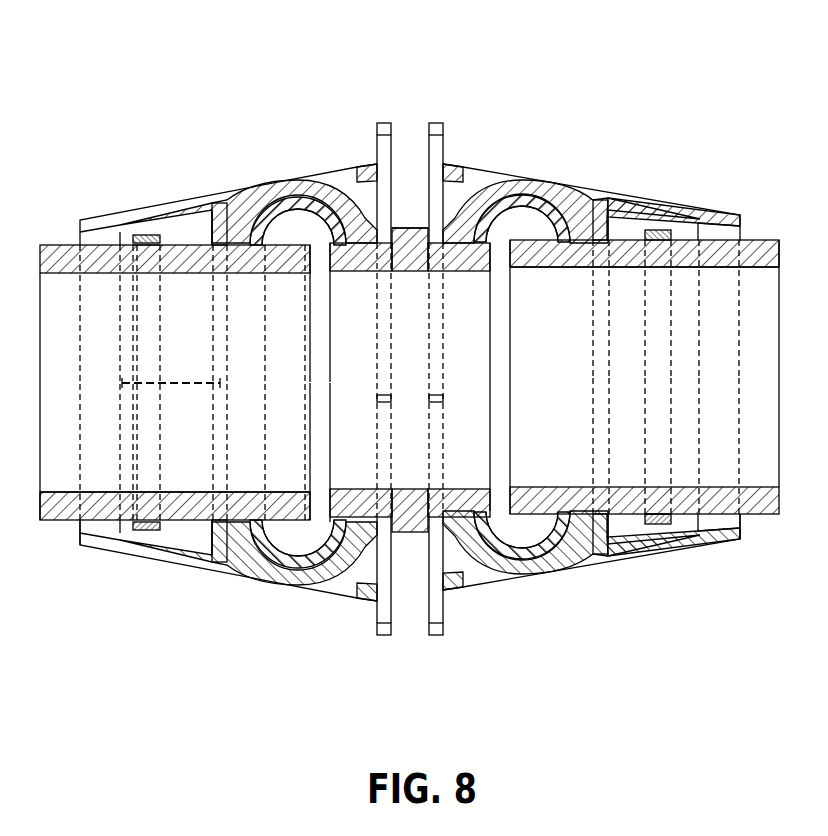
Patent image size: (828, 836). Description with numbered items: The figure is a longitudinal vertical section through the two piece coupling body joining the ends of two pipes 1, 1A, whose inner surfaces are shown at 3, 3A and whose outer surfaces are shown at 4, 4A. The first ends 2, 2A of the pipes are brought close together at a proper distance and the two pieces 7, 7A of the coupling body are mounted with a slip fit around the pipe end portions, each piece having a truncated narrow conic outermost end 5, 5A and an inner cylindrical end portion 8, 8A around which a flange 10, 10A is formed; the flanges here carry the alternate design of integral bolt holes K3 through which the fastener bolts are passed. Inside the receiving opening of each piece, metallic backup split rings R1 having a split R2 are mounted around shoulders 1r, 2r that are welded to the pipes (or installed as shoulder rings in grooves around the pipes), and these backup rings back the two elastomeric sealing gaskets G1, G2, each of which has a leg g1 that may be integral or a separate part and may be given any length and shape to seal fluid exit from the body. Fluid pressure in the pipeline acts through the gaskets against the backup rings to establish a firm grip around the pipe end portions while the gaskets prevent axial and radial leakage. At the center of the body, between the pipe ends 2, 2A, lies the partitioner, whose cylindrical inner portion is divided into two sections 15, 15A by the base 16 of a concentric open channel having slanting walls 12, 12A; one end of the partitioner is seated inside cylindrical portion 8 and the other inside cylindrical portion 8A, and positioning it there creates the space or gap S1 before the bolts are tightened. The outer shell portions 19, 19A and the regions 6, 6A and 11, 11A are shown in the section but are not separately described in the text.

The pipe 1 is at (57, 245).
The pipe 1A is at (768, 520).
The first end of pipe 2 is at (312, 500).
The first end of pipe 2A is at (560, 470).
The inner surface of pipe 3 is at (150, 492).
The inner surface of pipe 3A is at (680, 268).
The outer surface of pipe 4 is at (75, 521).
The outer surface of pipe 4A is at (746, 240).
The truncated narrow outermost end 5 is at (78, 547).
The truncated narrow outermost end 5A is at (735, 538).
The first ring housing 6 is at (150, 547).
The second ring housing 6A is at (578, 188).
The coupling body piece 7 is at (257, 183).
The coupling body piece 7A is at (560, 560).
The inner cylindrical end portion 8 is at (352, 165).
The inner cylindrical end portion 8A is at (465, 165).
The flange 10 is at (383, 123).
The flange 10A is at (437, 123).
The first sleeve 11 is at (312, 243).
The second sleeve 11A is at (497, 258).
The slanting wall 12 is at (375, 540).
The slanting wall 12A is at (458, 545).
The cylindrical section of partitioner 15 is at (352, 250).
The cylindrical section of partitioner 15A is at (446, 258).
The base of concentric open channel 16 is at (402, 250).
The first outer shell 19 is at (97, 228).
The second outer shell 19A is at (718, 213).
The integral bolt hole K3 is at (375, 130).
The space (gap) S1 is at (410, 170).
The backup split ring R1 is at (150, 236).
The split R2 is at (185, 383).
The sealing gasket G1 is at (228, 217).
The sealing gasket G2 is at (566, 215).
The leg of sealing gasket g1 is at (280, 183).
The shoulder 1r is at (140, 247).
The shoulder 2r is at (660, 524).